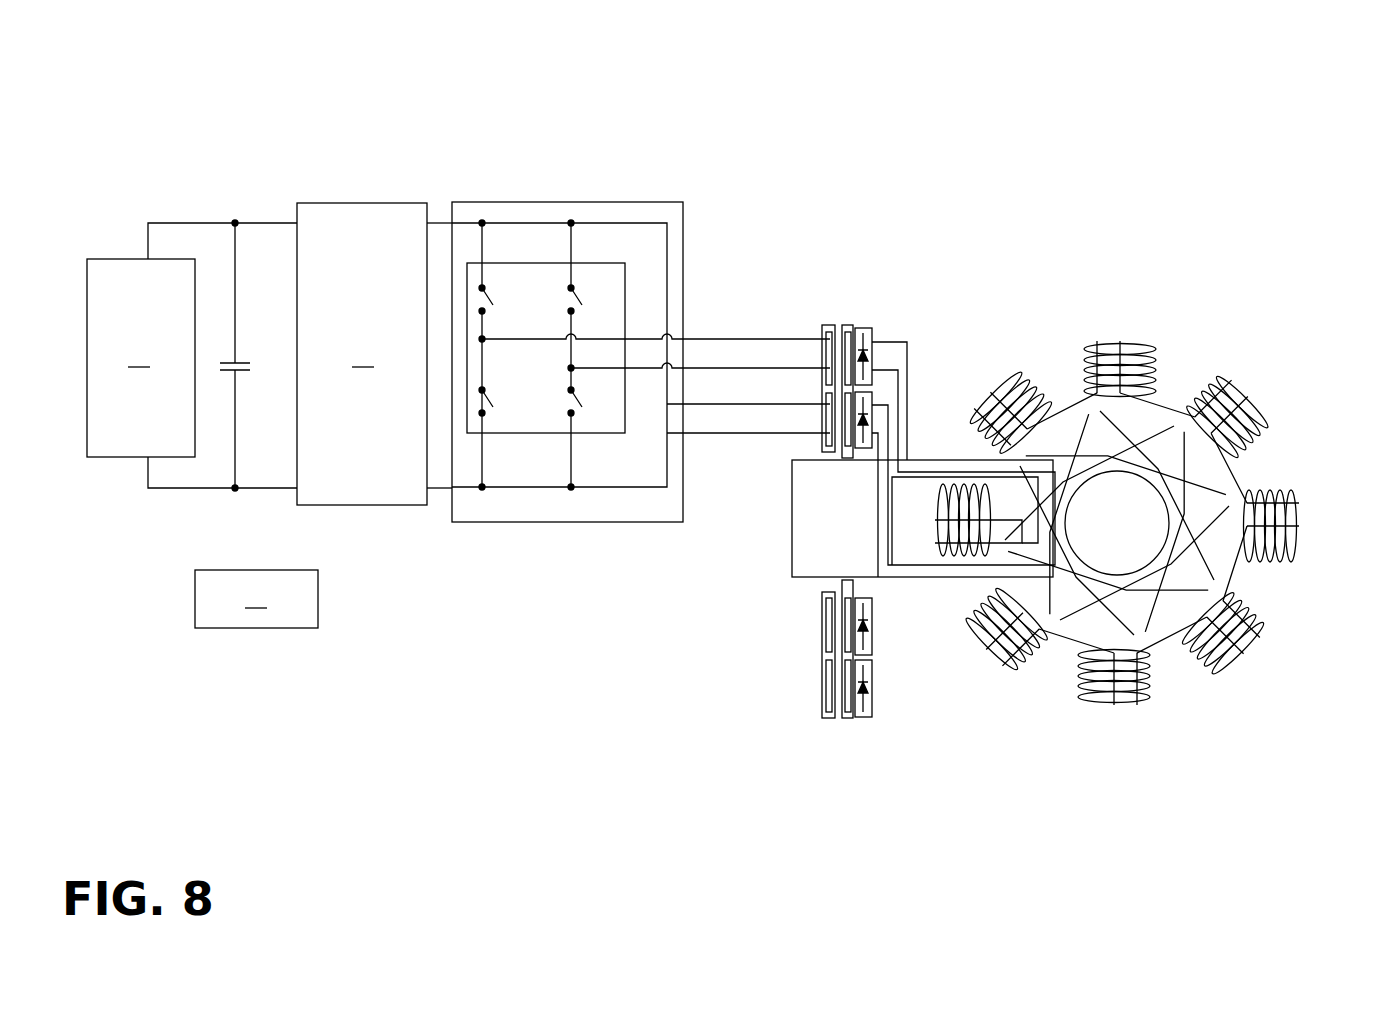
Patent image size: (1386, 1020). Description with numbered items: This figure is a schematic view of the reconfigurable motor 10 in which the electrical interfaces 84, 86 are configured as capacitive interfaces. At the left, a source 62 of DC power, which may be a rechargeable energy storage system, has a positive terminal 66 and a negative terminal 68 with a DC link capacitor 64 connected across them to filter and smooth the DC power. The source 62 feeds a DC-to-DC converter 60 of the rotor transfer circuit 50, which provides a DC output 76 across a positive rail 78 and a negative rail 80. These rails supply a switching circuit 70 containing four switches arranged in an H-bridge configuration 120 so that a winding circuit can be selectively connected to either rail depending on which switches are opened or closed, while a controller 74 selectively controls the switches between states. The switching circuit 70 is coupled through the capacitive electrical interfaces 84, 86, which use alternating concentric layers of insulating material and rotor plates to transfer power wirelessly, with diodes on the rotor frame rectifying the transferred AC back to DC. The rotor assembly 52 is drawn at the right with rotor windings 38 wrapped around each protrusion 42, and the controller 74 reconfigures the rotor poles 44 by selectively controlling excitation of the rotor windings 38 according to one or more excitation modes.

The reconfigurable motor 10 is at (950, 74).
The rotor windings 38 is at (964, 560).
The protrusion 42 is at (1003, 452).
The rotor poles 44 is at (942, 560).
The rotor transfer circuit 50 is at (684, 172).
The stator 52 is at (1132, 522).
The DC-to-DC converter 60 is at (362, 354).
The source 62 is at (192, 355).
The DC link capacitor 64 is at (238, 373).
The positive terminal 66 is at (147, 259).
The negative terminal 68 is at (146, 457).
The switching circuit 70 is at (566, 202).
The controller 74 is at (256, 599).
The DC output 76 is at (451, 190).
The positive rail 78 is at (432, 222).
The negative rail 80 is at (436, 490).
The electrical interface 84 is at (800, 443).
The electrical interface 86 is at (881, 322).
The H-bridge configuration 120 is at (583, 263).